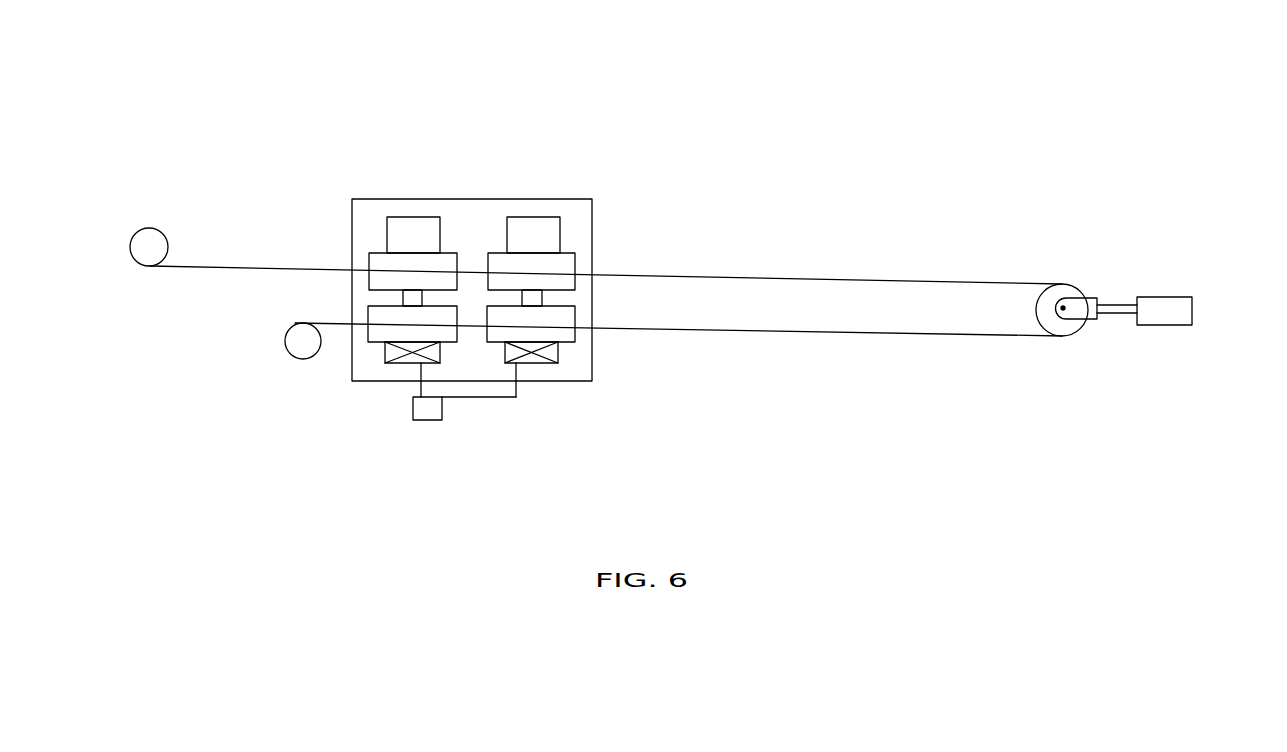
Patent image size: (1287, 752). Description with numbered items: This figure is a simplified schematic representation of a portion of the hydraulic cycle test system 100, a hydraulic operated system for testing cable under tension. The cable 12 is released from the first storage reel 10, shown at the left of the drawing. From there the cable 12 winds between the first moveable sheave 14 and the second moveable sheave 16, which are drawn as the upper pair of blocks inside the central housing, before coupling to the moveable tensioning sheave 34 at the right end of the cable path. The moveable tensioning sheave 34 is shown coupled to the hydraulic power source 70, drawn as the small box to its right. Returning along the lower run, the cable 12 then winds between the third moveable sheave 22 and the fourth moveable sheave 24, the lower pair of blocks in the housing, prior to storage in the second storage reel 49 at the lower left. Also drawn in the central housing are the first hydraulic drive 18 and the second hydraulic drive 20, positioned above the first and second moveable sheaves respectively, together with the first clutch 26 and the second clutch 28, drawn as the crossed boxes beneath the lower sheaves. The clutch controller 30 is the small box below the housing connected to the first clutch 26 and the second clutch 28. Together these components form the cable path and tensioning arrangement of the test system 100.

The hydraulic cycle test system 100 is at (903, 42).
The first storage reel 10 is at (157, 228).
The cable 12 is at (823, 277).
The first moveable sheave 14 is at (450, 258).
The second moveable sheave 16 is at (572, 263).
The first hydraulic drive 18 is at (410, 225).
The second hydraulic drive 20 is at (523, 223).
The third moveable sheave 22 is at (568, 342).
The fourth moveable sheave 24 is at (375, 336).
The first clutch 26 is at (527, 365).
The second clutch 28 is at (397, 361).
The clutch controller 30 is at (428, 417).
The moveable tensioning sheave 34 is at (1075, 290).
The second storage reel 49 is at (293, 338).
The hydraulic power source 70 is at (1182, 297).